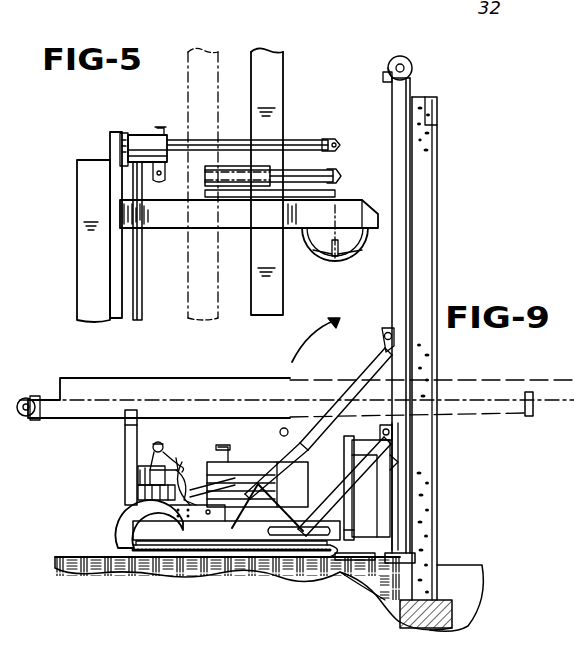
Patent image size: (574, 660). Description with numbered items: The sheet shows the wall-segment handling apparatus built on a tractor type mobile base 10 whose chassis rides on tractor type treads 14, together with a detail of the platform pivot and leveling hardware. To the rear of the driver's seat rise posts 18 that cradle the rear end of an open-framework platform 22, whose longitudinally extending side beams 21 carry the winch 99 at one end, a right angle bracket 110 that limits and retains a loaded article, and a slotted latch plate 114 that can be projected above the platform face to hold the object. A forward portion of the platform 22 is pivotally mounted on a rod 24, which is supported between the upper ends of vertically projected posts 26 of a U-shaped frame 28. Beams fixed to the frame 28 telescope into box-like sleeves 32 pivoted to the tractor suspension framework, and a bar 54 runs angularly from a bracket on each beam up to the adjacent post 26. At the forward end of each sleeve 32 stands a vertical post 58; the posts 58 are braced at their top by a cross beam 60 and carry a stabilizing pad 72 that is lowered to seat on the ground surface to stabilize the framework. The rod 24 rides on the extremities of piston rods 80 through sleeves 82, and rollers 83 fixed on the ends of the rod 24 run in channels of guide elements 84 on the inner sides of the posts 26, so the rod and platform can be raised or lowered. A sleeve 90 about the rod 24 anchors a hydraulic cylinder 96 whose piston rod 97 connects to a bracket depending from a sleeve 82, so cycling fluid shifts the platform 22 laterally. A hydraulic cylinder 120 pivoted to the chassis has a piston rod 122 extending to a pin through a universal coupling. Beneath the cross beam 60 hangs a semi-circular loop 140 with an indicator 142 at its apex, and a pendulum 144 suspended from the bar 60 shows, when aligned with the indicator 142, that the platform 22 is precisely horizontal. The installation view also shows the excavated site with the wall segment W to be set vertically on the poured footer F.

In FIG. 9, the tractor type mobile base 10 is at (116, 495).
In FIG. 9, the tractor type treads 14 is at (118, 541).
In FIG. 9, the posts 18 is at (125, 455).
In FIG. 9, the side beams 21 is at (392, 292).
In FIG. 5, the platform 22 is at (205, 52).
In FIG. 5, the rod 24 is at (334, 141).
In FIG. 5, the posts 26 is at (78, 210).
In FIG. 9, the U-shaped frame 28 is at (402, 462).
In FIG. 9, the box-like sleeve 32 is at (224, 545).
In FIG. 9, the bar 54 is at (350, 486).
In FIG. 9, the vertical post 58 is at (344, 437).
In FIG. 5, the cross beam 60 is at (348, 208).
In FIG. 9, the stabilizing pad 72 is at (340, 572).
In FIG. 5, the piston rods 80 is at (142, 270).
In FIG. 5, the sleeves 82 is at (145, 135).
In FIG. 5, the rollers 83 is at (124, 133).
In FIG. 5, the guide elements 84 is at (110, 265).
In FIG. 5, the sleeve 90 is at (293, 140).
In FIG. 5, the hydraulic cylinder 96 is at (336, 176).
In FIG. 5, the piston rod 97 is at (197, 172).
In FIG. 9, the winch 99 is at (402, 57).
In FIG. 9, the right angle bracket 110 is at (76, 378).
In FIG. 9, the latch plate 114 is at (528, 392).
In FIG. 9, the hydraulic cylinder 120 is at (284, 428).
In FIG. 9, the piston rod 122 is at (362, 362).
In FIG. 5, the semi-circular loop 140 is at (346, 268).
In FIG. 5, the indicator 142 is at (316, 254).
In FIG. 5, the pendulum 144 is at (352, 252).
In FIG. 9, the wall W is at (437, 272).
In FIG. 9, the footer F is at (446, 604).